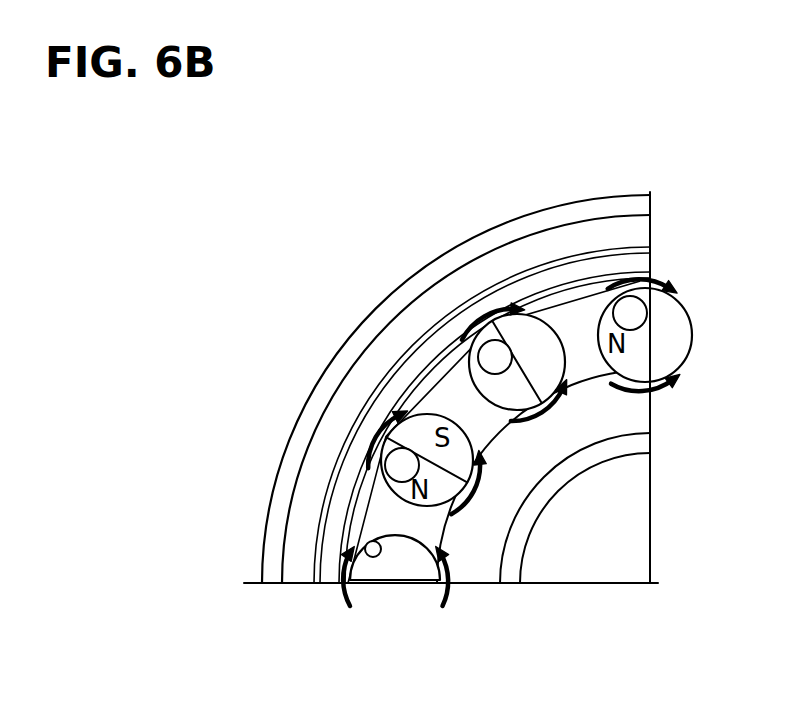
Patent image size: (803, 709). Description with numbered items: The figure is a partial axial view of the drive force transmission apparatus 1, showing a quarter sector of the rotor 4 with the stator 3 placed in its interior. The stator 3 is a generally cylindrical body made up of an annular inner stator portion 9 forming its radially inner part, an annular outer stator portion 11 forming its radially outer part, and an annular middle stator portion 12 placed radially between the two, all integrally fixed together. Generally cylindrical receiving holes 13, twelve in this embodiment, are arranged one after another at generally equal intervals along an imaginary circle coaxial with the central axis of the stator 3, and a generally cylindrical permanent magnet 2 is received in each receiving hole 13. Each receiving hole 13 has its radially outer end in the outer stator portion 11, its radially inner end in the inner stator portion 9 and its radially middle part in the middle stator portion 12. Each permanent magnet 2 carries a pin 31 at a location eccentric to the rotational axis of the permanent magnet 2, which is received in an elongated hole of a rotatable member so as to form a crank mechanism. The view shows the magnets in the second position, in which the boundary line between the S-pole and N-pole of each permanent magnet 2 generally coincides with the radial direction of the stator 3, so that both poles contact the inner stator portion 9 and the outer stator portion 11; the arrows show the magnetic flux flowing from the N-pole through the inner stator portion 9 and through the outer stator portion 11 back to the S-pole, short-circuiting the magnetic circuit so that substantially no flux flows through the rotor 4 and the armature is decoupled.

The drive force transmission apparatus 1 is at (309, 207).
The permanent magnet 2 is at (520, 330).
The stator 3 is at (638, 413).
The rotor 4 is at (551, 212).
The inner stator portion 9 is at (477, 562).
The outer stator portion 11 is at (372, 606).
The middle stator portion 12 is at (423, 535).
The receiving hole 13 is at (366, 547).
The pin 31 is at (403, 462).